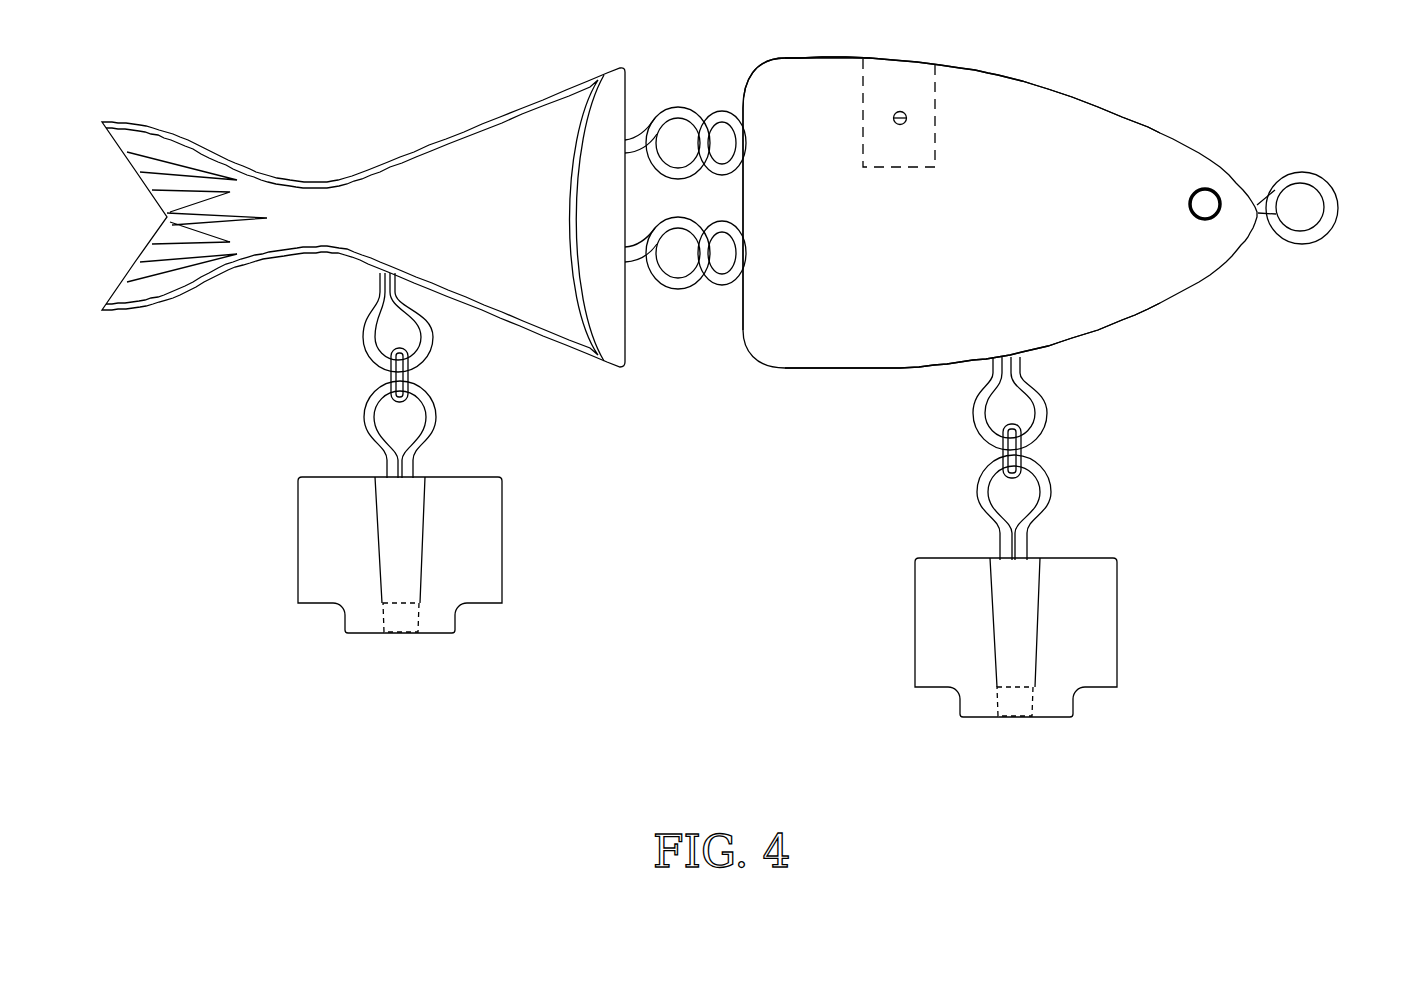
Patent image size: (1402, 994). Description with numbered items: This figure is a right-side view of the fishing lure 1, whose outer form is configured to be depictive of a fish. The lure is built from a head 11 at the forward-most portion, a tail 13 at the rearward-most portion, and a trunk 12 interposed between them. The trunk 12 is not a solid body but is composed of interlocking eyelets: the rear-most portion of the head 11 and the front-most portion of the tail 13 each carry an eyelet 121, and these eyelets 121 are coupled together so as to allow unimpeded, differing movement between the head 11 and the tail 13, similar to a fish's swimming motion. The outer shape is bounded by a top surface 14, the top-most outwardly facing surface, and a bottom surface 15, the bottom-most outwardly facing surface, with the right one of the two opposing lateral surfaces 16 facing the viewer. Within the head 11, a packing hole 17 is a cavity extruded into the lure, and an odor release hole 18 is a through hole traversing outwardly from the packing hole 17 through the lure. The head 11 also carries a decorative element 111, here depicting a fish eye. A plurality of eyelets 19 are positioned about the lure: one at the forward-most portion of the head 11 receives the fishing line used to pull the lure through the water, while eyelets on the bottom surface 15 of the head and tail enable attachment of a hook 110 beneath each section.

The fishing lure 1 is at (739, 382).
The head 11 is at (1000, 216).
The decorative element 111 is at (1203, 213).
The trunk 12 is at (709, 195).
The eyelet 121 is at (700, 287).
The tail 13 is at (404, 168).
The top surface 14 is at (822, 57).
The bottom surface 15 is at (813, 370).
The lateral surface 16 is at (906, 249).
The packing hole 17 is at (912, 158).
The odor release hole 18 is at (907, 118).
The eyelet 19 is at (1293, 235).
The hook 110 is at (440, 628).